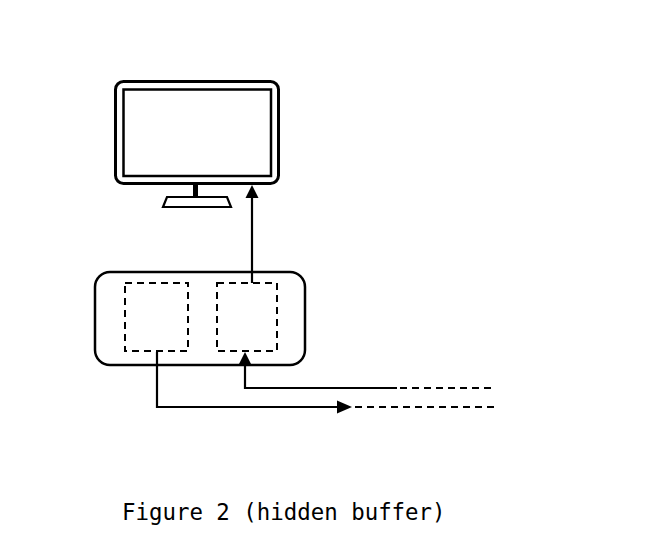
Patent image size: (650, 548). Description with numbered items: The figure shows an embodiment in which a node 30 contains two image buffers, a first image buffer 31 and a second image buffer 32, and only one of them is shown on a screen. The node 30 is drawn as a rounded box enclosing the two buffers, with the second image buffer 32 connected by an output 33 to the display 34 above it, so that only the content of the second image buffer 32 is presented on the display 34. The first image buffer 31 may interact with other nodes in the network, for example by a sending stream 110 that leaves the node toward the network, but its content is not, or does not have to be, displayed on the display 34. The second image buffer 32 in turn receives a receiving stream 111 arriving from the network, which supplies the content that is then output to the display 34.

The node 30 is at (130, 272).
The first image buffer 31 is at (125, 318).
The second image buffer 32 is at (277, 318).
The output 33 is at (252, 232).
The display 34 is at (255, 80).
The sending stream 110 is at (207, 407).
The receiving stream 111 is at (312, 388).